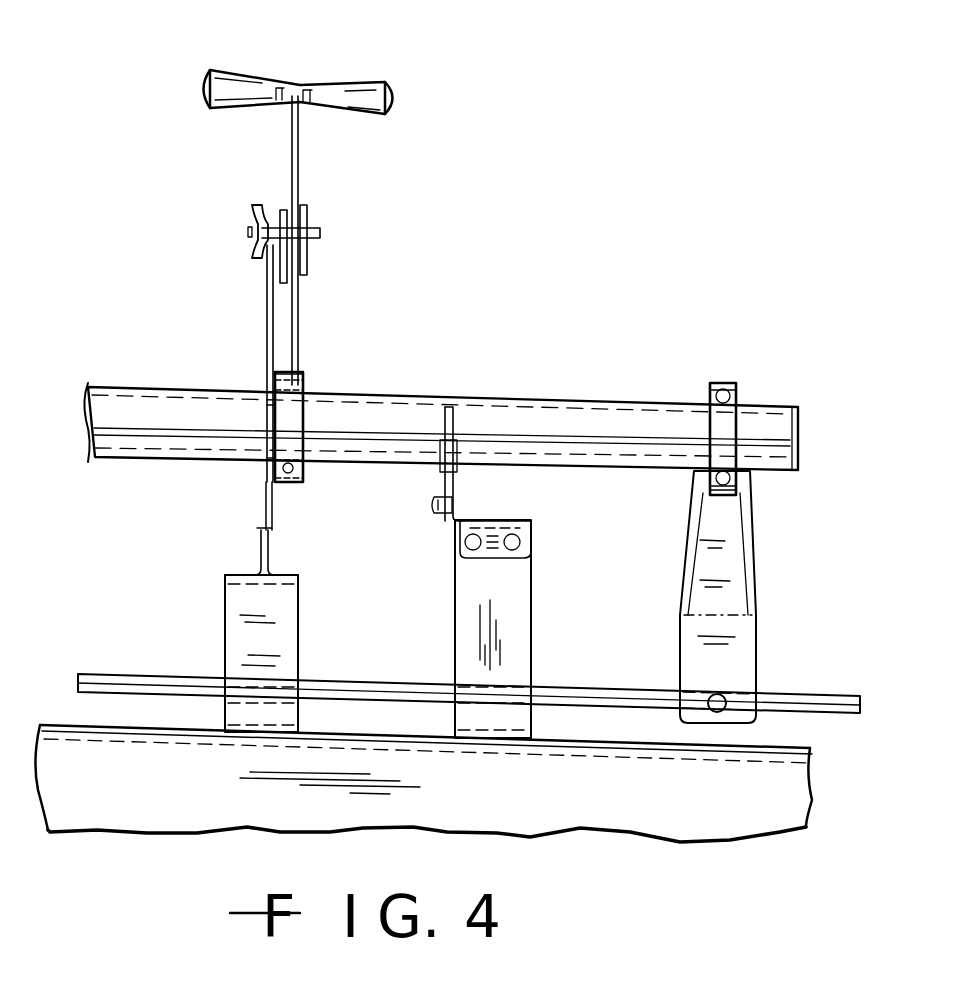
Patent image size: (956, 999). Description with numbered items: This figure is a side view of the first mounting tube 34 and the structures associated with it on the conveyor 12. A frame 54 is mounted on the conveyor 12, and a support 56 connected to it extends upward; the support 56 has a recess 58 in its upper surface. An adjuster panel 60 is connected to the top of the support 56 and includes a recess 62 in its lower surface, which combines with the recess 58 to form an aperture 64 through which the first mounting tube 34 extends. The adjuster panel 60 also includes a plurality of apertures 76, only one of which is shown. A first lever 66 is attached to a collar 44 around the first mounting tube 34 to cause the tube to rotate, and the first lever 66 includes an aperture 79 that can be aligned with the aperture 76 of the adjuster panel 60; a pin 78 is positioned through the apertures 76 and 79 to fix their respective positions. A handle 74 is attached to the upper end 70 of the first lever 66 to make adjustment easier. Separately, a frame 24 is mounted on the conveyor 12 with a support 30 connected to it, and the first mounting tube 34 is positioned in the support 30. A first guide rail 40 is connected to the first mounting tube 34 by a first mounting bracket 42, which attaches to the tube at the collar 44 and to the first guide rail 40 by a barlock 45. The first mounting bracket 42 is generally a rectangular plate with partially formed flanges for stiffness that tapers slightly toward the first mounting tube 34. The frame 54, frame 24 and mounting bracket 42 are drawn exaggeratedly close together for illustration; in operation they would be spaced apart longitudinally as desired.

The conveyor 12 is at (170, 725).
The frame 24 is at (515, 600).
The support 30 is at (455, 480).
The first mounting tube 34 is at (118, 386).
The first guide rail 40 is at (125, 677).
The first mounting bracket 42 is at (735, 522).
The collar 44 is at (725, 385).
The barlock 45 is at (718, 712).
The frame 54 is at (280, 615).
The support 56 is at (270, 498).
The recess 58 is at (266, 460).
The adjuster panel 60 is at (262, 302).
The recess 62 is at (274, 378).
The aperture 64 is at (266, 412).
The first lever 66 is at (300, 150).
The upper end 70 is at (300, 124).
The handle 74 is at (372, 82).
The aperture 76 is at (264, 215).
The pin 78 is at (310, 228).
The aperture 79 is at (308, 242).